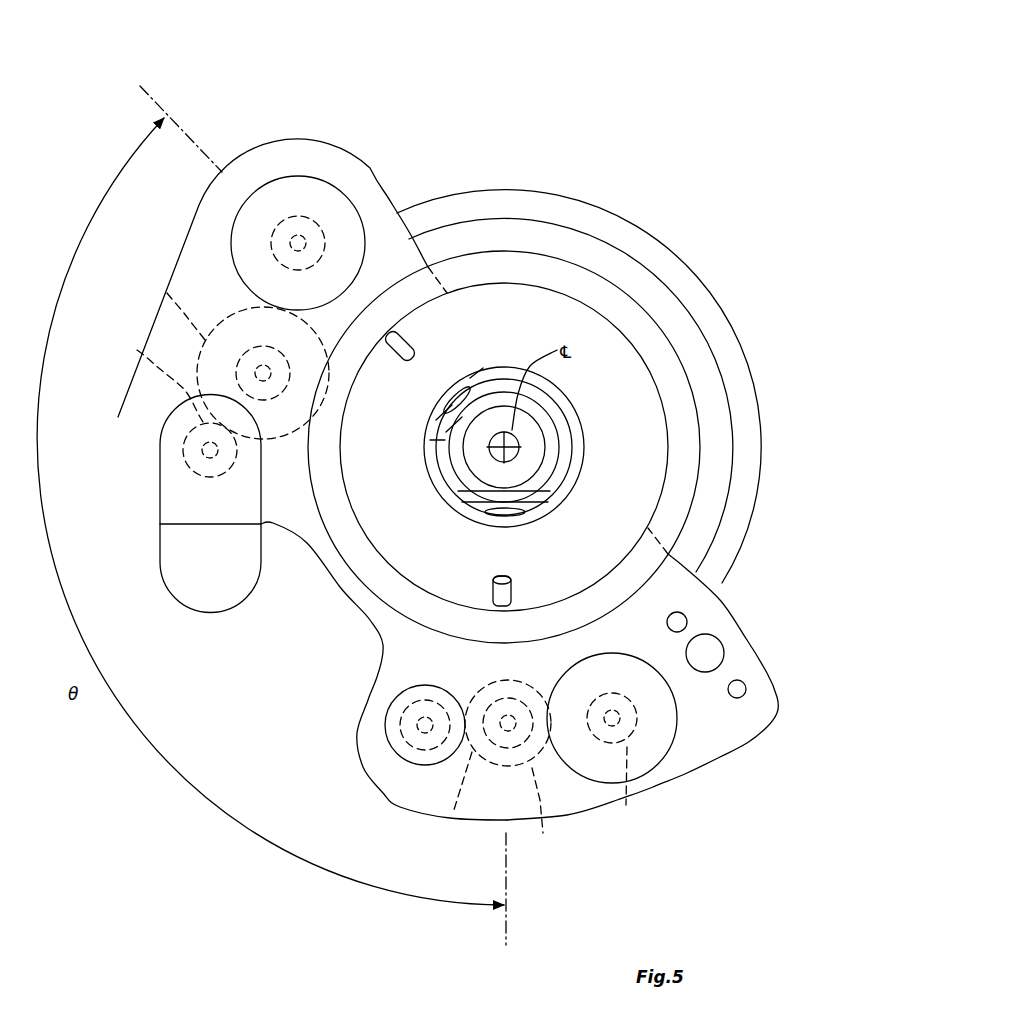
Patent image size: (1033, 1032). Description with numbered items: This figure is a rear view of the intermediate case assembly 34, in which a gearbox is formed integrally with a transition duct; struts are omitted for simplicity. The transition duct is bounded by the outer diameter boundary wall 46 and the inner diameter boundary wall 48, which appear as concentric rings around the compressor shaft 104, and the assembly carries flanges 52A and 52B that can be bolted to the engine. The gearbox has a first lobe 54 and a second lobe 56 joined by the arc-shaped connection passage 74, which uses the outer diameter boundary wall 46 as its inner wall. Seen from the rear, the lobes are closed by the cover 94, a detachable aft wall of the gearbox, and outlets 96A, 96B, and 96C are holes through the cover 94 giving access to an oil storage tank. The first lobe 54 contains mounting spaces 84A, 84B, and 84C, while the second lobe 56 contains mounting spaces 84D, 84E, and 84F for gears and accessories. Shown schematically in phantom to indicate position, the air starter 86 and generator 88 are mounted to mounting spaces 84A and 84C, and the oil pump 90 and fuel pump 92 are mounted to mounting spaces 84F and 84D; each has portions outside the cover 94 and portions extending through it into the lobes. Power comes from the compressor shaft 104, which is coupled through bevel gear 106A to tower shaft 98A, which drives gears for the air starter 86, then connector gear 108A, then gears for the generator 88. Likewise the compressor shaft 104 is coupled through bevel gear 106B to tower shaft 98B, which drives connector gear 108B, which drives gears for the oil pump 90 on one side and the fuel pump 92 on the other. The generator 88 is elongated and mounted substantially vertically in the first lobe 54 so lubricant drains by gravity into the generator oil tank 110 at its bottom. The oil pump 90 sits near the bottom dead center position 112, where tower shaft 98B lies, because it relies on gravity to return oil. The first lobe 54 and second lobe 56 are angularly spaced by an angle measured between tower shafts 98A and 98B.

The intermediate case assembly 34 is at (593, 116).
The outer diameter boundary wall 46 is at (568, 293).
The inner diameter boundary wall 48 is at (620, 370).
The flange 52A is at (657, 257).
The flange 52B is at (677, 382).
The first lobe 54 is at (368, 155).
The second lobe 56 is at (769, 726).
The connection passage 74 is at (300, 577).
The mounting space 84A is at (290, 212).
The mounting space 84B is at (247, 312).
The mounting space 84C is at (137, 350).
The mounting space 84D is at (368, 705).
The mounting space 84E is at (447, 818).
The mounting space 84F is at (626, 805).
The air starter 86 is at (268, 213).
The generator 88 is at (183, 500).
The oil pump 90 is at (660, 723).
The fuel pump 92 is at (393, 738).
The cover 94 is at (213, 272).
The outlet 96A is at (687, 620).
The outlet 96B is at (715, 653).
The outlet 96C is at (745, 688).
The tower shaft 98A is at (481, 375).
The tower shaft 98B is at (498, 594).
The compressor shaft 104 is at (536, 445).
The bevel gear 106A is at (481, 372).
The bevel gear 106B is at (560, 496).
The connector gear 108A is at (165, 292).
The connector gear 108B is at (543, 833).
The generator oil tank 110 is at (177, 568).
The bottom dead center position 112 is at (503, 838).